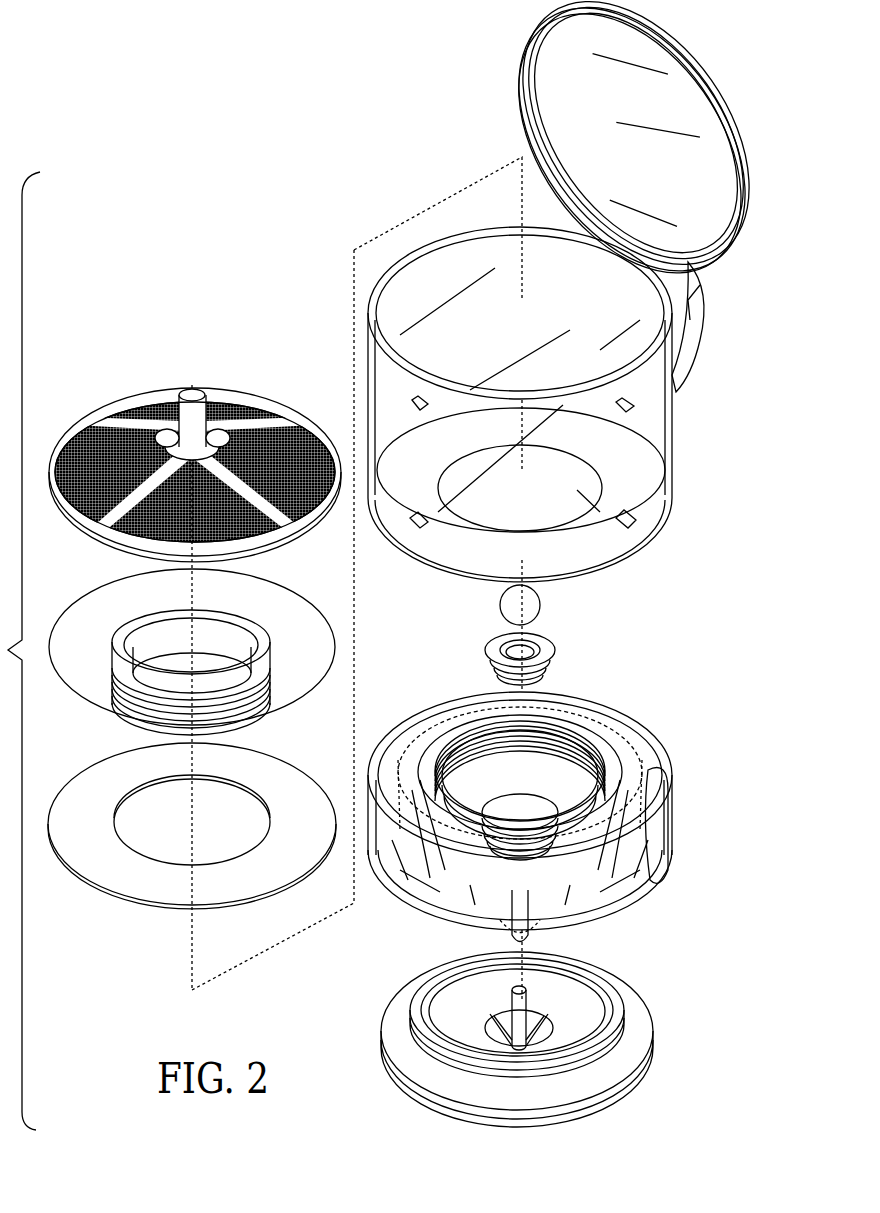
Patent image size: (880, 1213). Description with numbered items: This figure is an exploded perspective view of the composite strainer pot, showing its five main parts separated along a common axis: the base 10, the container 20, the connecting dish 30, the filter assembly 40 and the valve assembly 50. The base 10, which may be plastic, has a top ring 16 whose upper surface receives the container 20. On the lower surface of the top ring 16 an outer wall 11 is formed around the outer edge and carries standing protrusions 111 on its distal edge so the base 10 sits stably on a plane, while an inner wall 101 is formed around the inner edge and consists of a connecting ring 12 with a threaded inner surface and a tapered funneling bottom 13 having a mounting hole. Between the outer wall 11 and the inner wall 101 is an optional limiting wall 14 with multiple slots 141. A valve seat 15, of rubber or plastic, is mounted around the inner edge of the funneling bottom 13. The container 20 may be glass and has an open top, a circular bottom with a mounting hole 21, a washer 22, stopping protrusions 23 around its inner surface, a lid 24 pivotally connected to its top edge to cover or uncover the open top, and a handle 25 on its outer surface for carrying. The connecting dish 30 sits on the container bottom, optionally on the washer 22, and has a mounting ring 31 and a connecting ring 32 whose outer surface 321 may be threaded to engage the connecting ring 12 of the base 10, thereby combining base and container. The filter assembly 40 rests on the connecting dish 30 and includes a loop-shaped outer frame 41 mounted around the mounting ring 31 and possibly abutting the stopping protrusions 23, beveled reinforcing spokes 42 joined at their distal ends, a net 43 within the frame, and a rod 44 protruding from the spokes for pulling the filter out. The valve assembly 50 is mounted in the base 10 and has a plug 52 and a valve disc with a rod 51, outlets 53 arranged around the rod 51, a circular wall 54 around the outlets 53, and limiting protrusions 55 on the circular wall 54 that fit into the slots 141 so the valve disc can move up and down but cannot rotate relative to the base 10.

The base 10 is at (541, 812).
The inner wall 101 is at (575, 735).
The outer wall 11 is at (642, 897).
The standing protrusions 111 is at (545, 933).
The connecting ring 12 is at (432, 745).
The funneling bottom 13 is at (474, 736).
The limiting wall 14 is at (450, 920).
The slots 141 is at (410, 880).
The valve seat 15 is at (552, 648).
The top ring 16 is at (656, 762).
The container 20 is at (563, 404).
The mounting hole 21 is at (592, 527).
The washer 22 is at (115, 866).
The stopping protrusions 23 is at (636, 524).
The lid 24 is at (718, 92).
The handle 25 is at (703, 312).
The connecting dish 30 is at (180, 665).
The mounting ring 31 is at (70, 632).
The connecting ring 32 is at (132, 625).
The outer surface 321 is at (132, 727).
The filter assembly 40 is at (184, 455).
The outer frame 41 is at (82, 526).
The reinforcing spokes 42 is at (132, 405).
The net 43 is at (276, 420).
The rod 44 is at (210, 396).
The valve assembly 50 is at (491, 1039).
The rod 51 is at (530, 1022).
The plug 52 is at (541, 605).
The outlets 53 is at (492, 1040).
The circular wall 54 is at (582, 1050).
The limiting protrusions 55 is at (626, 1066).